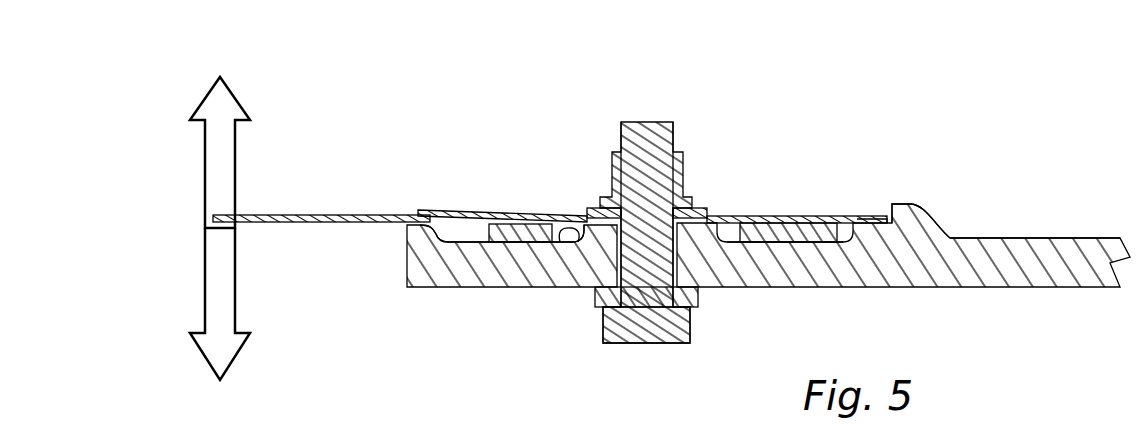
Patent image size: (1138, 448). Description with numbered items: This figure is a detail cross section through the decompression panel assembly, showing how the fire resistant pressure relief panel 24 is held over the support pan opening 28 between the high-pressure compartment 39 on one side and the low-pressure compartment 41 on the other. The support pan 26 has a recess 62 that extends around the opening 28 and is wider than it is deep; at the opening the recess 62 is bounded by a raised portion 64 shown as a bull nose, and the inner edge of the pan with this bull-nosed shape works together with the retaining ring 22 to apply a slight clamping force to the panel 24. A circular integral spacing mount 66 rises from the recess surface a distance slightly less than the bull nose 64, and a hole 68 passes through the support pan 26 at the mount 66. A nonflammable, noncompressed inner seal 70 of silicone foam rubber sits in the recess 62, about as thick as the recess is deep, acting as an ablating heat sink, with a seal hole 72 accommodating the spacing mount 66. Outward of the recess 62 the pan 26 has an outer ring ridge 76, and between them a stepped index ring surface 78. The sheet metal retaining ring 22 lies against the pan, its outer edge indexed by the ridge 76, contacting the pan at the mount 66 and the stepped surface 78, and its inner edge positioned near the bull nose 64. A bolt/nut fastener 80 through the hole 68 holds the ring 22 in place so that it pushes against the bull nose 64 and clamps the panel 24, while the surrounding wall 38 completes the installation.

The retaining ring 22 is at (428, 211).
The pressure relief panel 24 is at (320, 215).
The support pan 26 is at (890, 262).
The support pan opening 28 is at (405, 270).
The wall 38 is at (1085, 238).
The high-pressure compartment 39 is at (230, 334).
The low-pressure compartment 41 is at (231, 124).
The recess 62 is at (460, 243).
The raised portion 64 is at (420, 227).
The integral spacing mount 66 is at (580, 243).
The hole 68 is at (622, 258).
The inner seal 70 is at (522, 230).
The seal hole 72 is at (563, 230).
The outer ring ridge 76 is at (900, 204).
The stepped index ring surface 78 is at (872, 224).
The fastener 80 is at (620, 345).